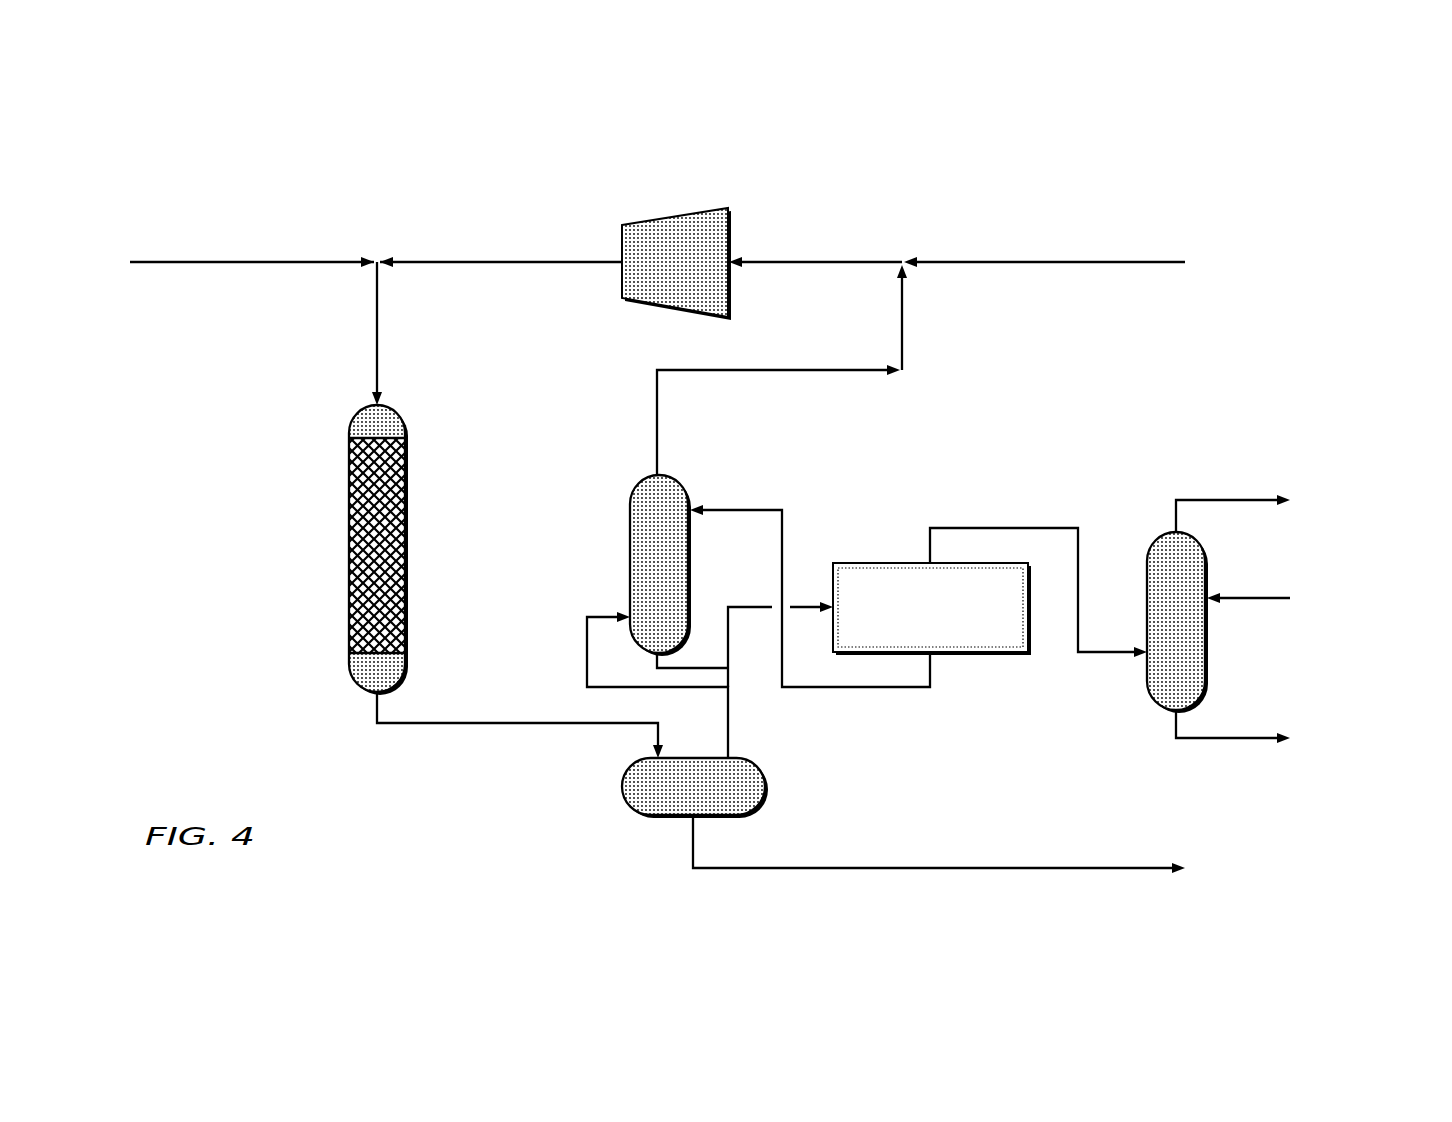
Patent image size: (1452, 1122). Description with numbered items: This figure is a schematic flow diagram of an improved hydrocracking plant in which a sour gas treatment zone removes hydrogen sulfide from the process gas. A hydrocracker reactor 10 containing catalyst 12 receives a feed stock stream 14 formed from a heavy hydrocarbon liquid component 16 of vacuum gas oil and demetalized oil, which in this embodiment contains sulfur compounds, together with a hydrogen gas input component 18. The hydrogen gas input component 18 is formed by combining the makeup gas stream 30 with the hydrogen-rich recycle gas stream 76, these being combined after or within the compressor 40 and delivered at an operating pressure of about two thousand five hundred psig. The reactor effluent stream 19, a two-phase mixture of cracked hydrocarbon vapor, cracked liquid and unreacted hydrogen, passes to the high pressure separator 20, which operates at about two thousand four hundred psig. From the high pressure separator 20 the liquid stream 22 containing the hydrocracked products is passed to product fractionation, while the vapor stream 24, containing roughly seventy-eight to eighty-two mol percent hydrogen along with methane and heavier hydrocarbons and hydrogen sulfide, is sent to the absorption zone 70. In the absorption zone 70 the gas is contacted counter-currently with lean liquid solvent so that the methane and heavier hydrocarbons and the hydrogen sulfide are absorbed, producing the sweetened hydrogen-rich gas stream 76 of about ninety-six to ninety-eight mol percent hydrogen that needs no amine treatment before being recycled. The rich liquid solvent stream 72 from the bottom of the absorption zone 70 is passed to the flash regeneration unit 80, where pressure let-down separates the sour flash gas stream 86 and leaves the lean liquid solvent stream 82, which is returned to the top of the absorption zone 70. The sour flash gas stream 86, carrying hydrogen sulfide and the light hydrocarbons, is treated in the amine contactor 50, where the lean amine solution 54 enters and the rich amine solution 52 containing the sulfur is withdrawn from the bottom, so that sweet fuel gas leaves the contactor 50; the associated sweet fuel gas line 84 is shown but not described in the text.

The hydrocracker reactor 10 is at (296, 428).
The catalyst 12 is at (348, 532).
The feed stock stream 14 is at (376, 322).
The heavy hydrocarbon liquid component 16 is at (210, 264).
The hydrogen gas input component 18 is at (462, 262).
The reactor effluent stream 19 is at (378, 708).
The high pressure separator 20 is at (622, 787).
The liquid stream 22 is at (936, 866).
The vapor stream 24 is at (586, 660).
The makeup gas stream 30 is at (1147, 261).
The compressor 40 is at (677, 217).
The amine contact zone 50 is at (1207, 642).
The rich amine solution 52 is at (1220, 742).
The lean amine solution 54 is at (1250, 597).
The absorption zone 70 is at (630, 545).
The rich liquid solvent stream 72 is at (660, 668).
The hydrogen-rich gas stream 76 is at (900, 315).
The flash regeneration unit 80 is at (1056, 583).
The lean liquid solvent stream 82 is at (783, 560).
The sweet fuel gas line 84 is at (1243, 500).
The sour flash gas stream 86 is at (1032, 527).